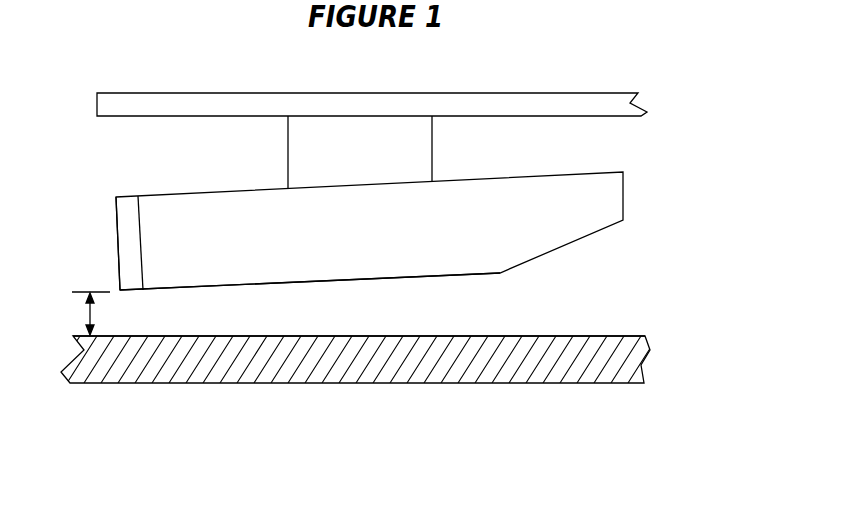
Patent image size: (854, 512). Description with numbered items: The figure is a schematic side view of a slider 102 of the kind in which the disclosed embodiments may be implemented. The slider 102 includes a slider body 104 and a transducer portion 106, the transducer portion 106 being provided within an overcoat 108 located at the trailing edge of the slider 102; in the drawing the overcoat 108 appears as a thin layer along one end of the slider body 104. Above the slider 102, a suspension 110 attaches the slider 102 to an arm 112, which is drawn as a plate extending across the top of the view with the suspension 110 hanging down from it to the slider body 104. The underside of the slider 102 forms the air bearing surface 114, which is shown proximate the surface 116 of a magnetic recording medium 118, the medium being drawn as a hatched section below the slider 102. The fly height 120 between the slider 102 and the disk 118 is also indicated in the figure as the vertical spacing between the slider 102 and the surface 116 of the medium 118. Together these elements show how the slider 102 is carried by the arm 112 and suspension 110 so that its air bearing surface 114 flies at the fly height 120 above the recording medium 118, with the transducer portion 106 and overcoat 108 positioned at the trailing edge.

The slider 102 is at (650, 189).
The slider body 104 is at (538, 178).
The transducer portion 106 is at (142, 311).
The overcoat 108 is at (120, 234).
The suspension 110 is at (434, 147).
The arm 112 is at (581, 100).
The air bearing surface 114 is at (388, 281).
The surface 116 is at (539, 336).
The magnetic recording medium 118 is at (515, 384).
The fly height 120 is at (76, 313).